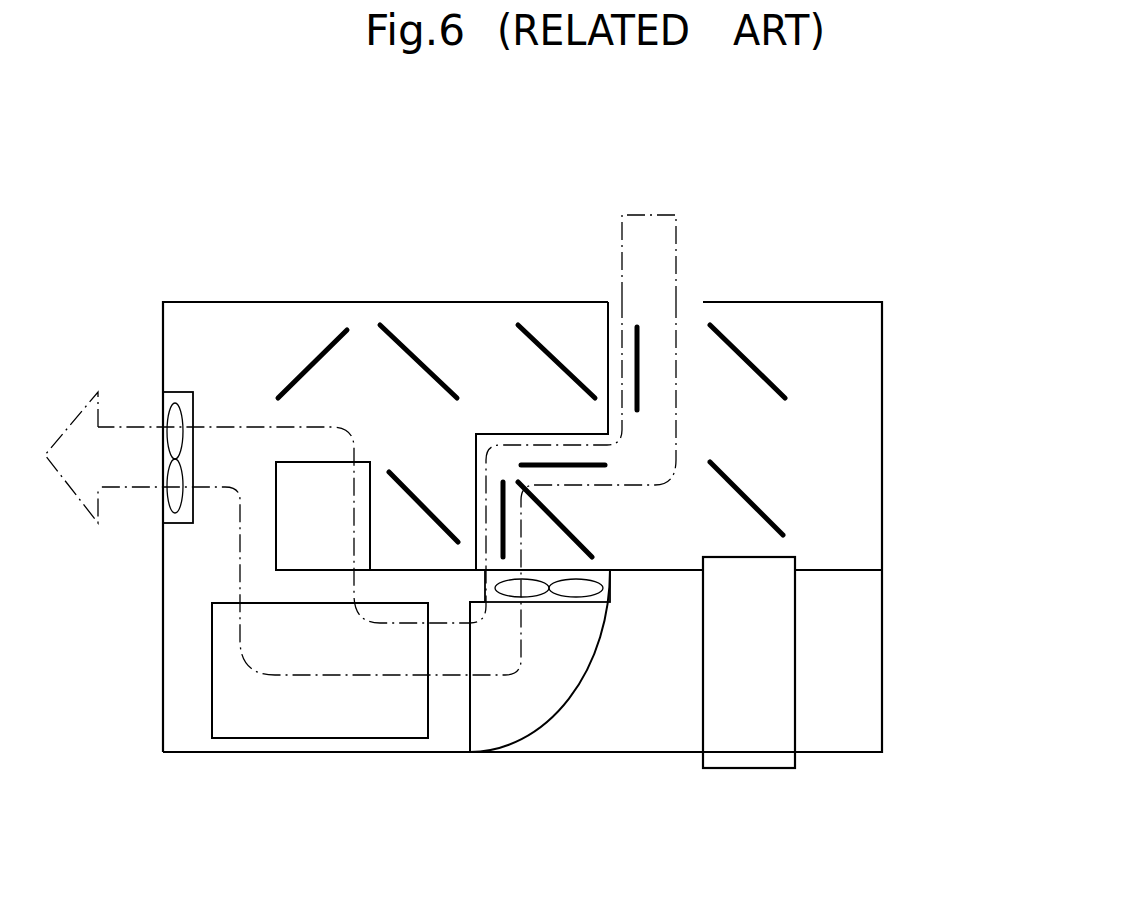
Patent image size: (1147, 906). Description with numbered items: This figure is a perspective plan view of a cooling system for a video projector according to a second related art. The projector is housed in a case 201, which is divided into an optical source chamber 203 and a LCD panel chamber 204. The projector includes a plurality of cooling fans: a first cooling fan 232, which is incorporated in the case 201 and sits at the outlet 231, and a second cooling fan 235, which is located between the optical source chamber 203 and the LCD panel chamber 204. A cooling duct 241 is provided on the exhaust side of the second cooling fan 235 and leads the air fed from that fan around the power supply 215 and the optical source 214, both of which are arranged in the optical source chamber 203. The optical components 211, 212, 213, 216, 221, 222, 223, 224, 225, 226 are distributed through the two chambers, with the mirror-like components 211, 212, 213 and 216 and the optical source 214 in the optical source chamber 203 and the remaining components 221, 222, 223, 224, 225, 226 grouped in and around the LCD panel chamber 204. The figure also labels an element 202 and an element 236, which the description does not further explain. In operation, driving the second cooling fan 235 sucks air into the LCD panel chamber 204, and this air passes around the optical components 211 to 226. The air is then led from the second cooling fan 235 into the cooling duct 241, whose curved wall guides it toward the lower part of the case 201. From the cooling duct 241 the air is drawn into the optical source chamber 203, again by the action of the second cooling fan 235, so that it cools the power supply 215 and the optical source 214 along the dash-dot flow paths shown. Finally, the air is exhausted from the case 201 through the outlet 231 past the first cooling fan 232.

The case 201 is at (859, 290).
The partition wall 202 is at (606, 328).
The optical source chamber 203 is at (229, 316).
The LCD panel chamber 204 is at (855, 393).
The optical component 211 is at (340, 343).
The optical component 212 is at (398, 337).
The optical component 213 is at (533, 338).
The optical source 214 is at (302, 475).
The power supply 215 is at (270, 723).
The optical component 216 is at (398, 490).
The optical component 221 is at (640, 383).
The optical component 222 is at (743, 348).
The optical component 223 is at (503, 513).
The optical component 224 is at (578, 537).
The optical component 225 is at (740, 493).
The optical component 226 is at (585, 467).
The outlet 231 is at (163, 452).
The first cooling fan 232 is at (173, 497).
The second cooling fan 235 is at (575, 588).
The intake 236 is at (648, 298).
The cooling duct 241 is at (520, 713).